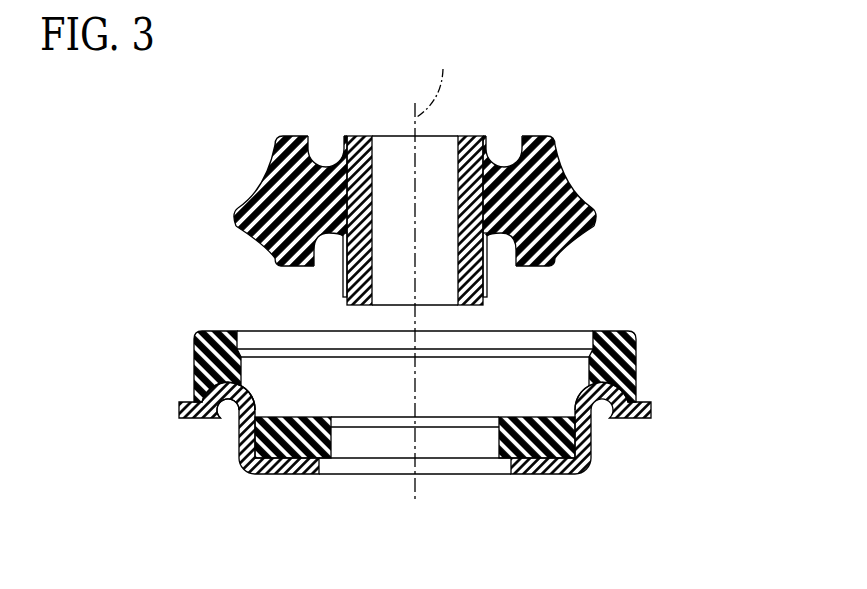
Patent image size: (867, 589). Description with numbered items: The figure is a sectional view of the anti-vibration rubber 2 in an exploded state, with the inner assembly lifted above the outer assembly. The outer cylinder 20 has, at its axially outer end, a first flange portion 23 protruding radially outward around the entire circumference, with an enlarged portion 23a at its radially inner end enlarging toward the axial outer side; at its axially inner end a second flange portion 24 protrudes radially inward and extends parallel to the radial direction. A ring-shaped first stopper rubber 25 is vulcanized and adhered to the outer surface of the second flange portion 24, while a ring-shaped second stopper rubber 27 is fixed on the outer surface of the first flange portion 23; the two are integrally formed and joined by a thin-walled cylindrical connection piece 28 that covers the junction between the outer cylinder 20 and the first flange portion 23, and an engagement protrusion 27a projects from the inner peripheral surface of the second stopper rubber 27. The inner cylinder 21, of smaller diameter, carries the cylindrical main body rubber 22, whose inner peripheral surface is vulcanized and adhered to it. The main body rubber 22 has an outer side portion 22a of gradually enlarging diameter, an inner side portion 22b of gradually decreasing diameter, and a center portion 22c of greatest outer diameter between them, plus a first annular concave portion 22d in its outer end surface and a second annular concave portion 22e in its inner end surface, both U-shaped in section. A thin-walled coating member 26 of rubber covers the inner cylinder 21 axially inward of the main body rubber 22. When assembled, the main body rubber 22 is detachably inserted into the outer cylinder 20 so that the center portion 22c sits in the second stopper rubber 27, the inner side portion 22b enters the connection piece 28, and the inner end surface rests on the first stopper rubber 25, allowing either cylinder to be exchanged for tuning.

The anti-vibration rubber 2 is at (650, 78).
The outer cylinder 20 is at (240, 430).
The inner cylinder 21 is at (358, 135).
The main body rubber 22 is at (304, 137).
The outer side portion 22a is at (558, 157).
The inner side portion 22b is at (564, 243).
The center portion 22c is at (596, 215).
The first annular concave portion 22d is at (502, 147).
The second annular concave portion 22e is at (498, 240).
The first flange portion 23 is at (193, 398).
The enlarged portion 23a is at (228, 406).
The second flange portion 24 is at (289, 474).
The first stopper rubber 25 is at (536, 453).
The coating member 26 is at (342, 278).
The second stopper rubber 27 is at (633, 331).
The engagement protrusion 27a is at (584, 349).
The connection piece 28 is at (250, 386).